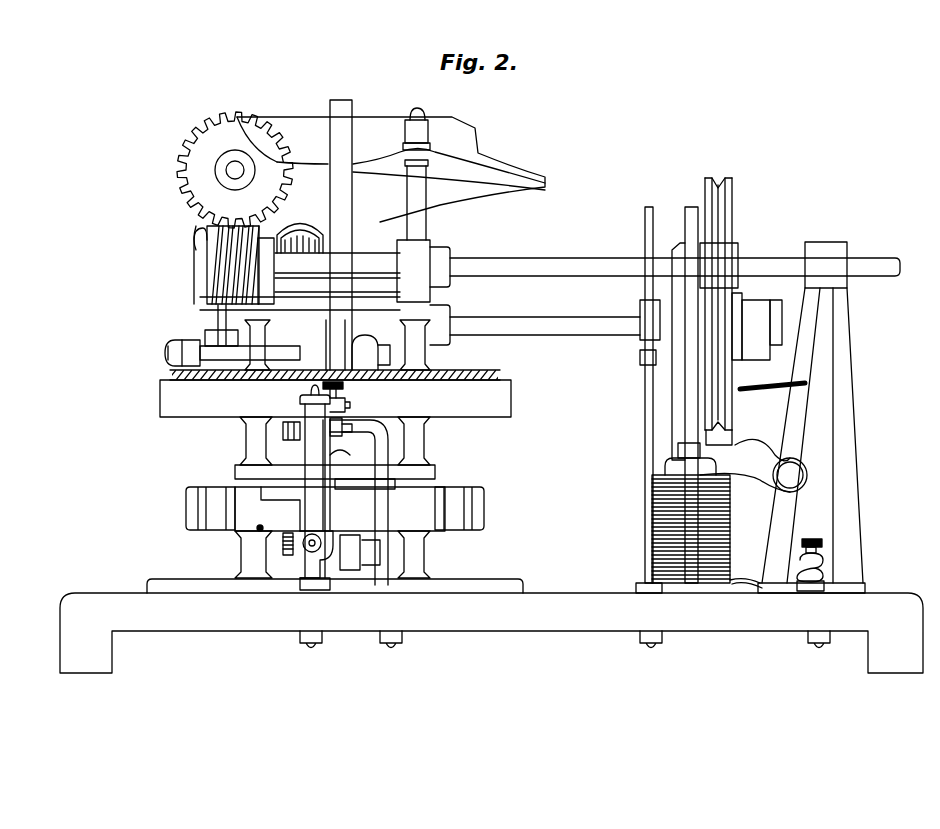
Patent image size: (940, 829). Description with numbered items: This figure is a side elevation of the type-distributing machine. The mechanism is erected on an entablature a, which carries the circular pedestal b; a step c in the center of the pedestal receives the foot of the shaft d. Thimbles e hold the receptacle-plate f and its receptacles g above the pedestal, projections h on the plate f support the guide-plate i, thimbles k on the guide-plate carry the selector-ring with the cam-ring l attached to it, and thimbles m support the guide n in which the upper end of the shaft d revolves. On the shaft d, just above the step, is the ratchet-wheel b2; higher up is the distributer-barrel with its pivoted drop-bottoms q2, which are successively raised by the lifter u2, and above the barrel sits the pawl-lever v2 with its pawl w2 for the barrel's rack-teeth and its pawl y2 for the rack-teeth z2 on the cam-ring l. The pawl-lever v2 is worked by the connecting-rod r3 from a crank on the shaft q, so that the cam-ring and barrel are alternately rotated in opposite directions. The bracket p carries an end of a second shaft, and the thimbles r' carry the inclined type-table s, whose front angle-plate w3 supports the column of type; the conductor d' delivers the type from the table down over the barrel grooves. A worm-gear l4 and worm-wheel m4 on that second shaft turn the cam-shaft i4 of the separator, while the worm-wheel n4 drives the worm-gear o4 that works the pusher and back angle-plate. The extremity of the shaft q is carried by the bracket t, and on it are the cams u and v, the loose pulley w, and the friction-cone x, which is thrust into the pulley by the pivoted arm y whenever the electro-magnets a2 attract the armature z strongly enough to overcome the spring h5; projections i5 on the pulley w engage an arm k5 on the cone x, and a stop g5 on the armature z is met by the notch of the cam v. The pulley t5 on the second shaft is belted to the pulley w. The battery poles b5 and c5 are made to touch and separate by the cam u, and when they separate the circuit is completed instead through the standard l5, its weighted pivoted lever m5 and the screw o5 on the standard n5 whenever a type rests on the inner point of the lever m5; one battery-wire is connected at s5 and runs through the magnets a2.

The entablature a is at (491, 633).
The pedestal b is at (335, 574).
The cam-ring l is at (323, 398).
The rack-teeth z2 is at (476, 378).
The worm-gear l4 is at (235, 170).
The shaft i4 is at (228, 172).
The type-table s is at (391, 155).
The angle-plate w3 is at (399, 129).
The thimbles r' is at (416, 200).
The conductor d' is at (329, 225).
The worm-wheel m4 is at (207, 275).
The worm-wheel n4 is at (195, 238).
The bracket p is at (351, 291).
The worm-gear o4 is at (323, 246).
The guide n is at (300, 288).
The friction-cone x is at (675, 296).
The shaft q is at (545, 340).
The connecting-rod r3 is at (216, 322).
The pawl y2 is at (185, 342).
The pawl-lever v2 is at (250, 352).
The thimbles m is at (337, 345).
The shaft d is at (334, 425).
The pawl w2 is at (366, 362).
The standard n5 is at (315, 492).
The screw o5 is at (344, 392).
The pivoted lever m5 is at (352, 438).
The lifter u2 is at (340, 434).
The guide-plate i is at (343, 464).
The thimbles k is at (335, 441).
The drop-bottoms q2 is at (283, 432).
The projections h is at (432, 478).
The standard l5 is at (387, 500).
The receptacle-plate f is at (340, 509).
The receptacles g is at (215, 528).
The thimbles e is at (339, 554).
The step c is at (321, 558).
The ratchet-wheel b2 is at (379, 553).
The pole c5 is at (645, 420).
The cam u is at (640, 282).
The pole b5 is at (635, 354).
The cam v is at (679, 395).
The pulley t5 is at (727, 304).
The loose pulley w is at (719, 437).
The arm k5 is at (756, 330).
The pivoted arm y is at (761, 333).
The bracket t is at (811, 417).
The spring h5 is at (795, 390).
The projections i5 is at (752, 405).
The stop g5 is at (678, 448).
The armature z is at (666, 466).
The electro-magnets a2 is at (652, 522).
The battery-wire connection s5 is at (826, 560).